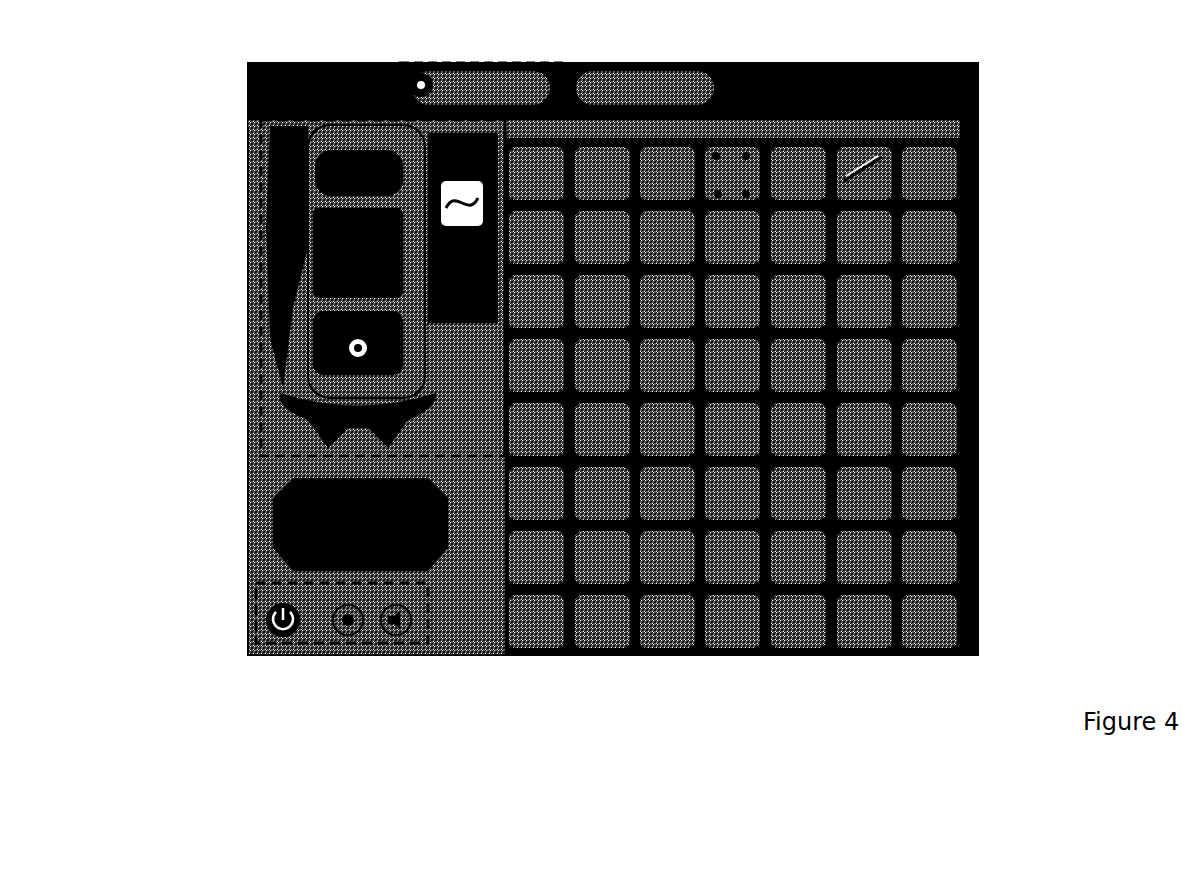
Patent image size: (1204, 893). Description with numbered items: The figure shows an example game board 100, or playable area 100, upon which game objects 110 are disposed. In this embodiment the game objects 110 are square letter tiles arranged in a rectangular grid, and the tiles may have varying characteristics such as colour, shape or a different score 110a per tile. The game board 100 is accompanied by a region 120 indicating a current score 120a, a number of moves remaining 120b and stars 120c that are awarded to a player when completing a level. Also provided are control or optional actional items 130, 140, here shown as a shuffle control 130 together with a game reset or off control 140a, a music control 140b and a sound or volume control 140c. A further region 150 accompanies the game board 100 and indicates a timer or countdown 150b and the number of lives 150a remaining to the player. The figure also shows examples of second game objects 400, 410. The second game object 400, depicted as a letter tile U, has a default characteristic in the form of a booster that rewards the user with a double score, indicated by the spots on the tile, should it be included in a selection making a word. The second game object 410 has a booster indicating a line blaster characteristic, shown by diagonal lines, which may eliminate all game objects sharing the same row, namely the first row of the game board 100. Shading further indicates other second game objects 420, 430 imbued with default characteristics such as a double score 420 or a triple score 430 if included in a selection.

The game board 100 is at (803, 648).
The game objects 110 is at (792, 336).
The scores 110a is at (968, 242).
The region 120 is at (329, 288).
The current score 120a is at (322, 158).
The number of moves remaining 120b is at (330, 338).
The stars 120c is at (277, 410).
The shuffle control 130 is at (298, 508).
The control items 140 is at (304, 653).
The game reset or off control 140a is at (258, 607).
The music control 140b is at (340, 638).
The sound or volume control 140c is at (390, 638).
The region 150 is at (554, 59).
The number of lives 150a is at (410, 66).
The timer or countdown 150b is at (530, 70).
The second game object 400 is at (728, 144).
The second game object 410 is at (862, 150).
The second game object 420 is at (668, 288).
The second game object 430 is at (938, 355).